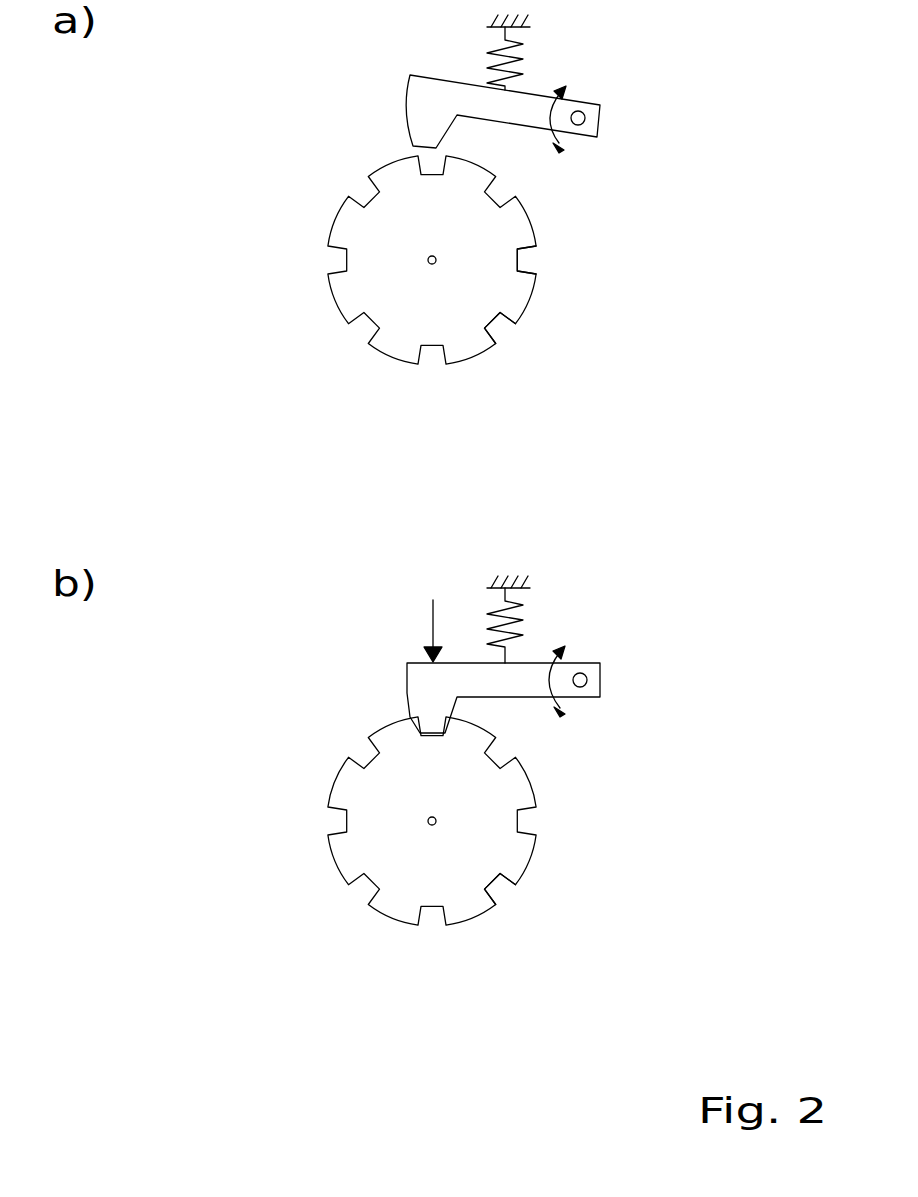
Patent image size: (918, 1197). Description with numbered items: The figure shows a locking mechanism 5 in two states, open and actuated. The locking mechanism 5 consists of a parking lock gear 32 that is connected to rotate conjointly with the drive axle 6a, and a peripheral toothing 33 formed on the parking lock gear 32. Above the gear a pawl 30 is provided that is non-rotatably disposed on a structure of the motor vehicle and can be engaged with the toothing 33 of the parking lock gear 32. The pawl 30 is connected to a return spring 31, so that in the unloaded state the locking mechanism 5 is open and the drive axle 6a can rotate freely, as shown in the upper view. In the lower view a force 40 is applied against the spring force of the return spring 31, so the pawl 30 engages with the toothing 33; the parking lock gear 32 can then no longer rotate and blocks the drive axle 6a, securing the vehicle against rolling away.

In FIG. 2a, the locking mechanism 5 is at (455, 197).
In FIG. 2b, the locking mechanism 5 is at (455, 758).
In FIG. 2a, the drive axle 6a is at (428, 261).
In FIG. 2b, the drive axle 6a is at (428, 822).
In FIG. 2a, the pawl 30 is at (425, 122).
In FIG. 2b, the pawl 30 is at (425, 683).
In FIG. 2a, the return spring 31 is at (527, 61).
In FIG. 2b, the return spring 31 is at (523, 622).
In FIG. 2a, the parking lock gear 32 is at (468, 218).
In FIG. 2b, the parking lock gear 32 is at (488, 802).
In FIG. 2a, the toothing 33 is at (527, 262).
In FIG. 2b, the toothing 33 is at (498, 890).
In FIG. 2b, the force 40 is at (430, 618).